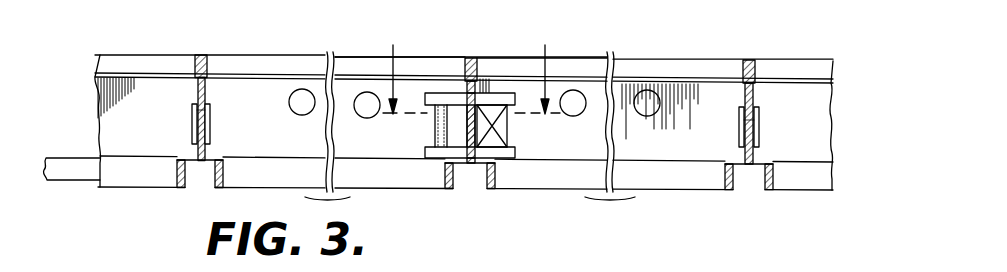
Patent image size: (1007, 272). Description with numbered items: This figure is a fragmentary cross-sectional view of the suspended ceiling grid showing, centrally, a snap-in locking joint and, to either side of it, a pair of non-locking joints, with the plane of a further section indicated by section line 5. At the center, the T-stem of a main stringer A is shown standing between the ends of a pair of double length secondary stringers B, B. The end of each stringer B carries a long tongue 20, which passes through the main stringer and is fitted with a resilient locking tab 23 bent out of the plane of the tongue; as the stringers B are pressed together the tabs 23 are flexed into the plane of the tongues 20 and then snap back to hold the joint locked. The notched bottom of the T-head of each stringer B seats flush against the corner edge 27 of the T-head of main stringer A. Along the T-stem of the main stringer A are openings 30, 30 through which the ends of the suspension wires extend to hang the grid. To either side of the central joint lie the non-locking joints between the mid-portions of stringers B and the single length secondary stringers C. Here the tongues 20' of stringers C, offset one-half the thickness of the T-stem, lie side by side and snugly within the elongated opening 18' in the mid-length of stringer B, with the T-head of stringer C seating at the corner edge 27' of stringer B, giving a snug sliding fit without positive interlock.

The section line 5- 5 is at (471, 57).
The elongated opening 18' is at (475, 119).
The tongue 20 is at (497, 126).
The tongue 20' is at (466, 118).
The resilient locking tab 23 is at (479, 115).
The corner edge 27 is at (634, 174).
The corner edge 27' is at (475, 172).
The openings 30 is at (362, 97).
The main stringer A is at (474, 55).
The double length secondary stringer B is at (258, 54).
The single length secondary stringer C is at (203, 55).